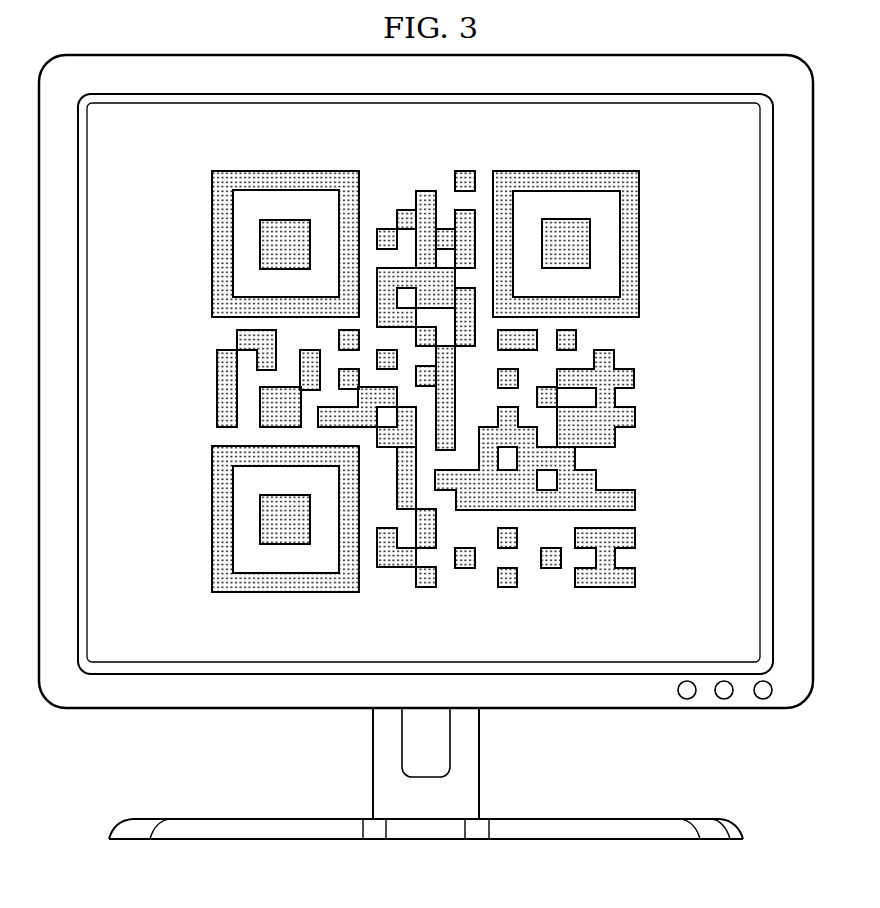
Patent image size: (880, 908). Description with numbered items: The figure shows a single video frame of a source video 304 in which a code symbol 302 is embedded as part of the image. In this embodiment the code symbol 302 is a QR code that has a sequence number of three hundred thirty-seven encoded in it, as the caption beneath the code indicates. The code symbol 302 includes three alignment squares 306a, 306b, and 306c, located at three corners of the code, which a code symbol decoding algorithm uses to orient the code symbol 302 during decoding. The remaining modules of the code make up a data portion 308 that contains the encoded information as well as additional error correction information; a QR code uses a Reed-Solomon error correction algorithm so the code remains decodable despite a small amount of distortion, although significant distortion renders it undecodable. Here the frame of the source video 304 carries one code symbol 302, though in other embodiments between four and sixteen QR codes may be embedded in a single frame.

The code symbol 302 is at (227, 343).
The source video 304 is at (443, 147).
The alignment square 306a is at (212, 245).
The alignment square 306b is at (639, 243).
The alignment square 306c is at (212, 519).
The data portion 308 is at (597, 419).